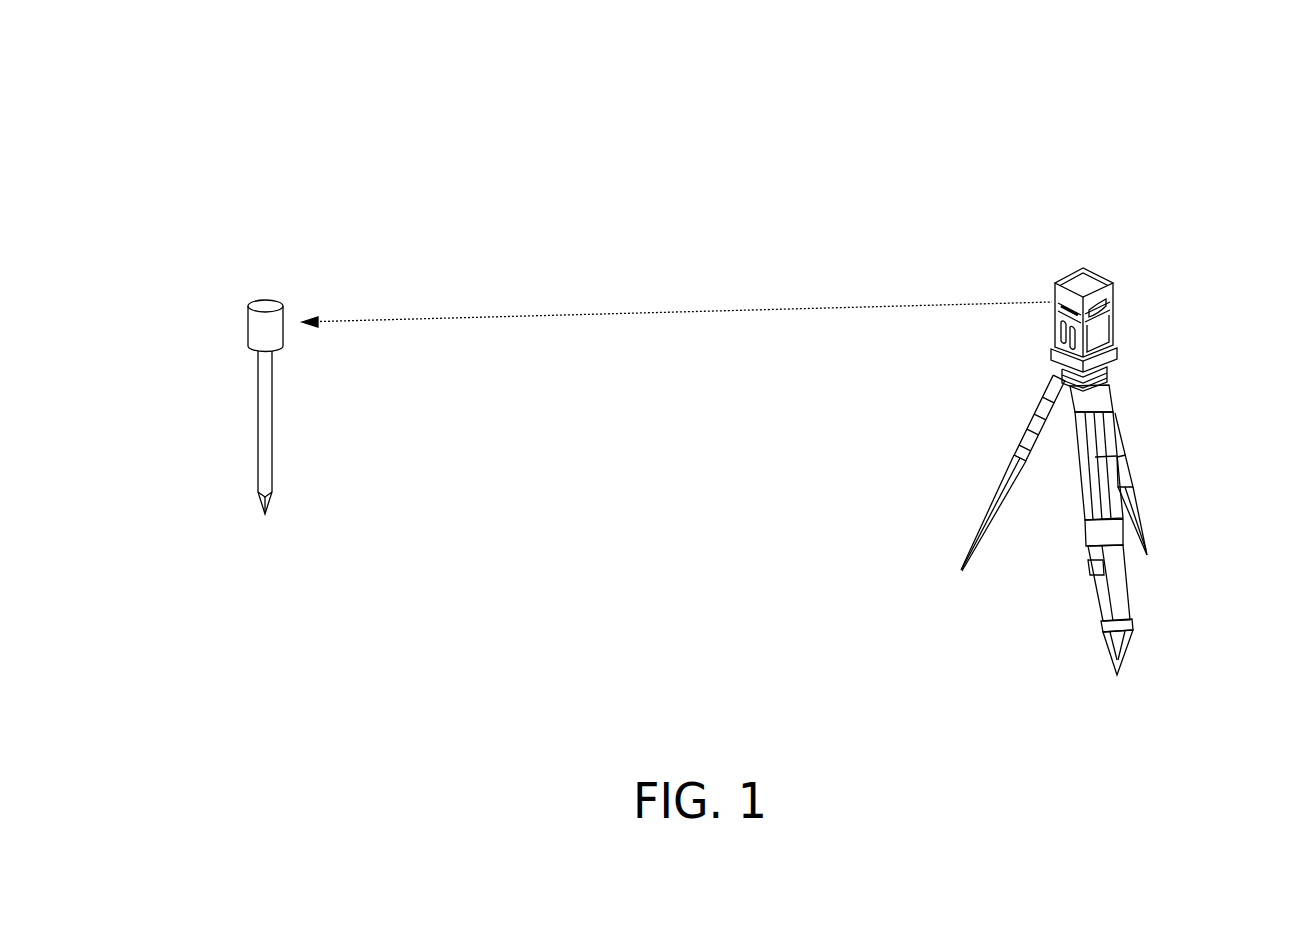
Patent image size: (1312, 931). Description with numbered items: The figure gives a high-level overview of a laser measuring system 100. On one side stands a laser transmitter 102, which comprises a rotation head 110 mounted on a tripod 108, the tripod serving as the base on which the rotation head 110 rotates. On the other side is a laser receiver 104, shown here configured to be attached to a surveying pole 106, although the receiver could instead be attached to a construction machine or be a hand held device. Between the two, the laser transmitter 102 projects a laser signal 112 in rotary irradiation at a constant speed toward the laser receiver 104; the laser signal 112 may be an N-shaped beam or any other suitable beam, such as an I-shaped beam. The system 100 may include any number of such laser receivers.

The laser measuring system 100 is at (749, 80).
The laser transmitter 102 is at (1078, 420).
The laser receiver 104 is at (257, 288).
The surveying pole 106 is at (240, 413).
The tripod 108 is at (992, 439).
The rotation head 110 is at (1073, 249).
The laser signal 112 is at (646, 287).